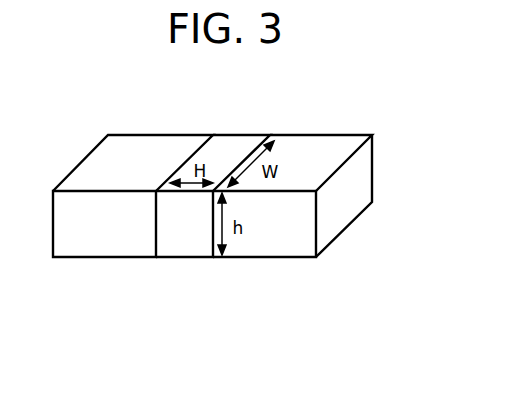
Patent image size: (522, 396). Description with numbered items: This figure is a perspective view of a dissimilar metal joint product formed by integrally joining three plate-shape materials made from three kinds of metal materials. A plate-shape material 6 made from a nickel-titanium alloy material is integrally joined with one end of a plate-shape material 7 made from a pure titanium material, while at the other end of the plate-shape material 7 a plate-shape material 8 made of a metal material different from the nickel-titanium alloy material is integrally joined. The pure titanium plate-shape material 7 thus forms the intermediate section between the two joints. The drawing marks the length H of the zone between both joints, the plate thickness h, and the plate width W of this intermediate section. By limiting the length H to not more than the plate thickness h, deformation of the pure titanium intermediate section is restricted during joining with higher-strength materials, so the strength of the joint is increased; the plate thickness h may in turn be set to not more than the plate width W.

The plate-shape material 6 is at (100, 237).
The plate-shape material 7 is at (192, 237).
The plate-shape material 8 is at (293, 237).